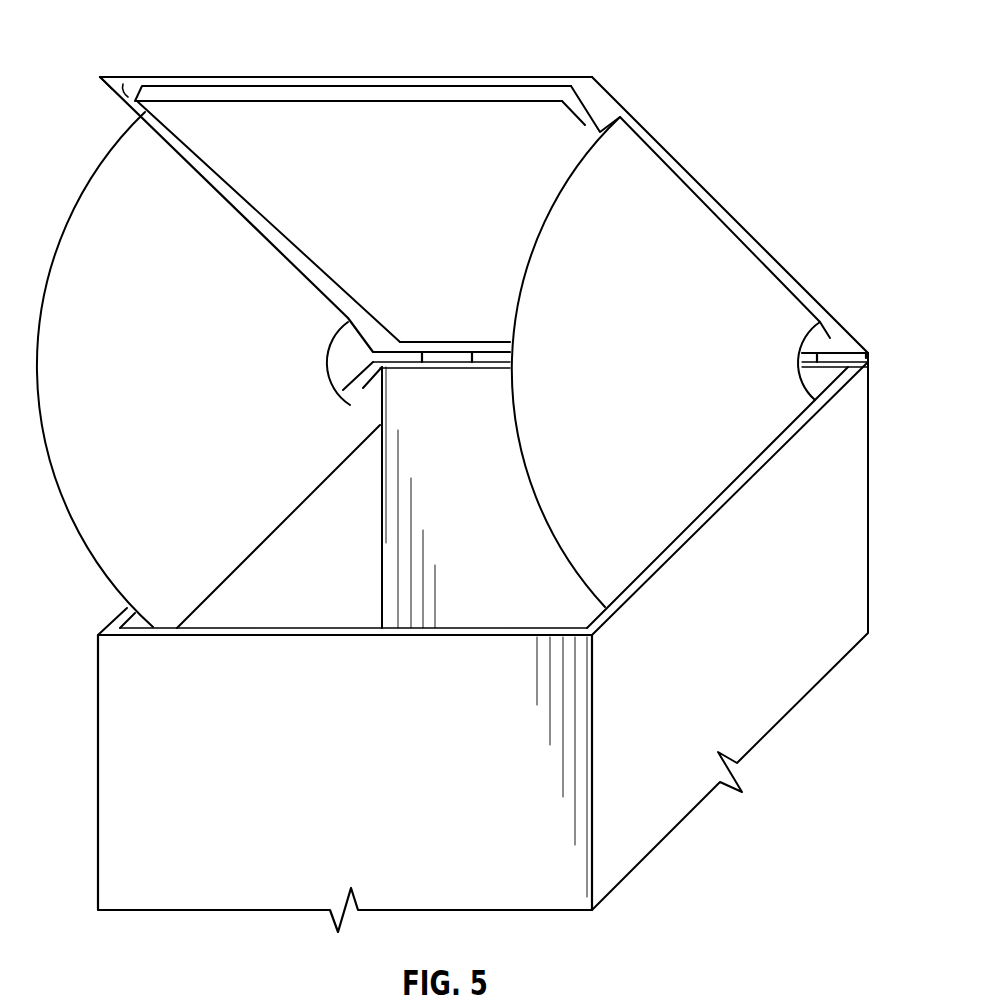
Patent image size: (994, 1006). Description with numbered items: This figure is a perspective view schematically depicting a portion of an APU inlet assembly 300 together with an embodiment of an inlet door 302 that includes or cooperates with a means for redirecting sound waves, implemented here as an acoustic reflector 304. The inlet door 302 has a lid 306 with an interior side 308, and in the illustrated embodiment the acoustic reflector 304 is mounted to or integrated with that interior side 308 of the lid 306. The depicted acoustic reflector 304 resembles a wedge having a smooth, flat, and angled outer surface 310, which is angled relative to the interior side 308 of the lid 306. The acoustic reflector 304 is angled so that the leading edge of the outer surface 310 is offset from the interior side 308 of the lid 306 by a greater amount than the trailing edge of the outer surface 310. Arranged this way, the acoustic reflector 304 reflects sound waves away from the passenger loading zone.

The APU inlet assembly 300 is at (818, 708).
The inlet door 302 is at (734, 196).
The acoustic reflector 304 is at (523, 85).
The lid 306 is at (217, 77).
The interior side 308 is at (117, 92).
The outer surface 310 is at (400, 127).